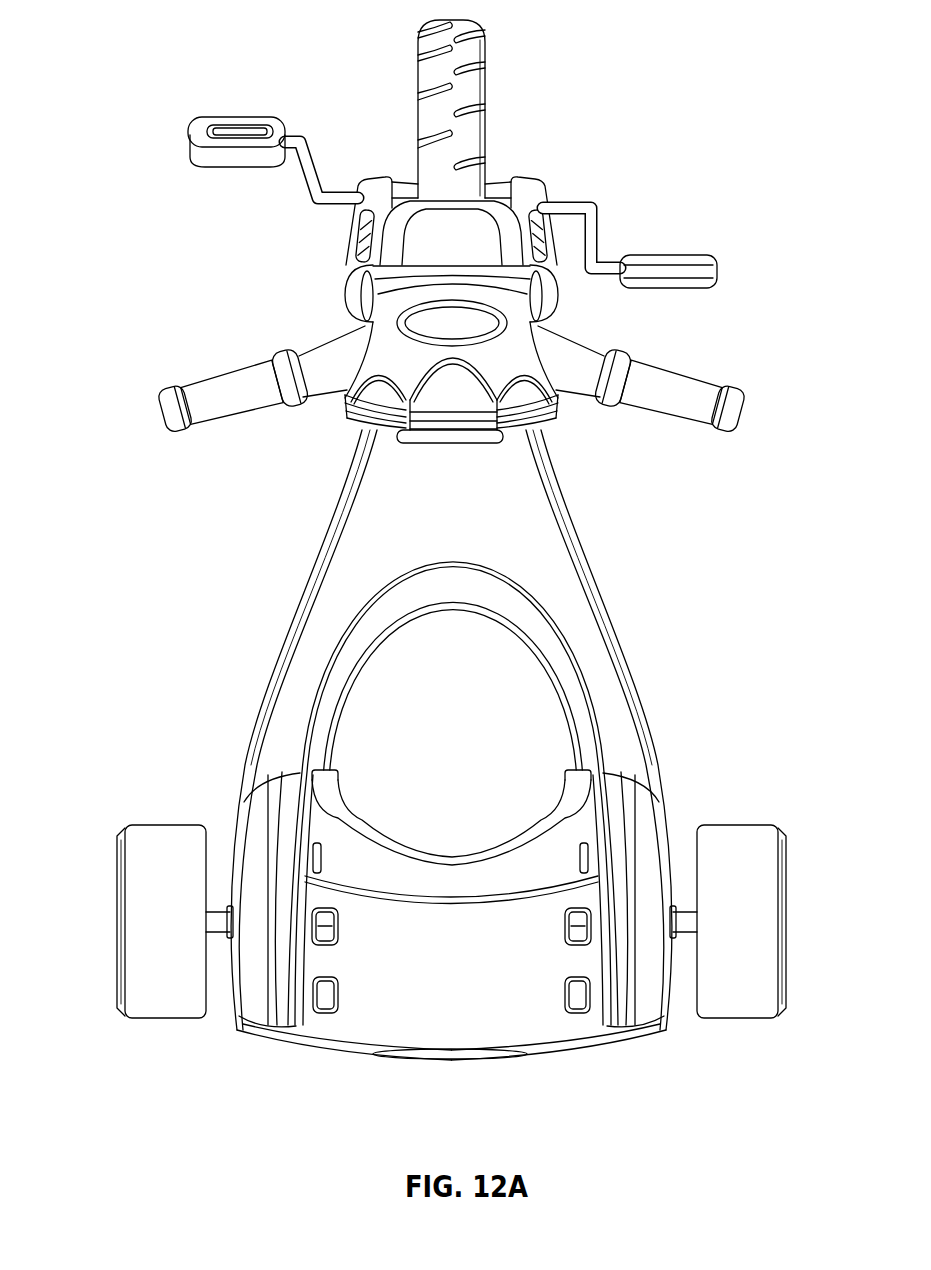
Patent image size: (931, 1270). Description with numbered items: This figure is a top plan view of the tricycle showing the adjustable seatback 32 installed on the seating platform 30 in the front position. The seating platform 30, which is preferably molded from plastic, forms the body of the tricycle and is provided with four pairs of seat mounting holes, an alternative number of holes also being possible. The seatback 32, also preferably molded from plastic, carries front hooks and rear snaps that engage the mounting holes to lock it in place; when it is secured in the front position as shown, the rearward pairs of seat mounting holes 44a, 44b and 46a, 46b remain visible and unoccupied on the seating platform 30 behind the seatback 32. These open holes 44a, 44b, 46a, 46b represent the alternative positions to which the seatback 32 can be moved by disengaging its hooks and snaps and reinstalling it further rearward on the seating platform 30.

The seating platform 30 is at (535, 697).
The seatback 32 is at (487, 882).
The seat mounting hole 44a is at (579, 925).
The seat mounting hole 44b is at (324, 925).
The seat mounting hole 46a is at (574, 1000).
The seat mounting hole 46b is at (327, 1000).